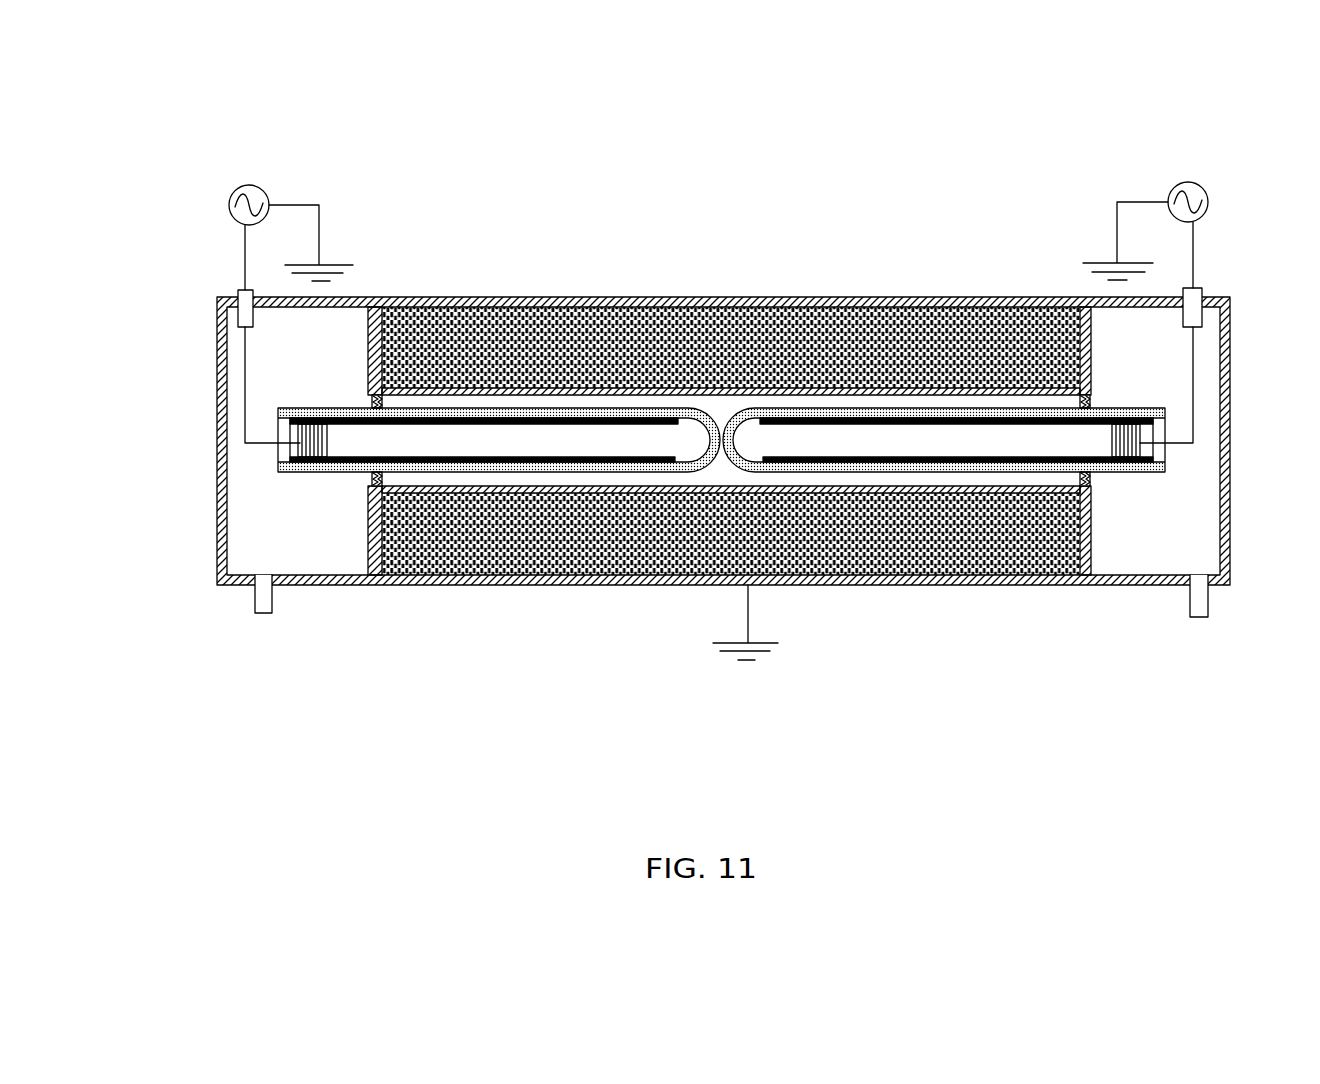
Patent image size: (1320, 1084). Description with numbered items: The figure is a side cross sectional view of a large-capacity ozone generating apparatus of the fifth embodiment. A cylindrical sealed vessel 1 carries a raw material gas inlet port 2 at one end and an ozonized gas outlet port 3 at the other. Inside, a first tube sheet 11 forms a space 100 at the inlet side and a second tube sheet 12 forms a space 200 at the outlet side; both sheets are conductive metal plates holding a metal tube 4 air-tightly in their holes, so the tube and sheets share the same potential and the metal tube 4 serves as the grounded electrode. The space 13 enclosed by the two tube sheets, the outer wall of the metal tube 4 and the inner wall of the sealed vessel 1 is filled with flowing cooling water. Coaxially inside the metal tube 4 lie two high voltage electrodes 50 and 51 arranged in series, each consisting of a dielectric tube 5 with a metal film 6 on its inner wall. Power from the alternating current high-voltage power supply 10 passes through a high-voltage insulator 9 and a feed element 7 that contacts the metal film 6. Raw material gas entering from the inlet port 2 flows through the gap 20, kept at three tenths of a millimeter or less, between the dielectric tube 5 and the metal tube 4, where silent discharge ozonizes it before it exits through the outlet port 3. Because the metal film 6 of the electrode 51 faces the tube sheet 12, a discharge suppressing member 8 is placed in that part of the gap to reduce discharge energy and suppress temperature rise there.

The sealed vessel 1 is at (457, 300).
The raw material gas inlet port 2 is at (253, 615).
The ozonized gas outlet port 3 is at (1210, 597).
The metal tube 4 is at (580, 390).
The dielectric tube 5 is at (625, 473).
The metal film 6 is at (510, 460).
The feed element 7 is at (313, 452).
The discharge suppressing member 8 is at (373, 482).
The high-voltage insulator 9 is at (238, 292).
The alternating current high-voltage power supply 10 is at (231, 199).
The first tube sheet 11 is at (385, 298).
The second tube sheet 12 is at (1092, 530).
The cooling water space 13 is at (507, 342).
The gap 20 is at (440, 482).
The high voltage electrode 50 is at (640, 699).
The high voltage electrode 51 is at (998, 699).
The space 100 is at (252, 532).
The space 200 is at (1105, 315).